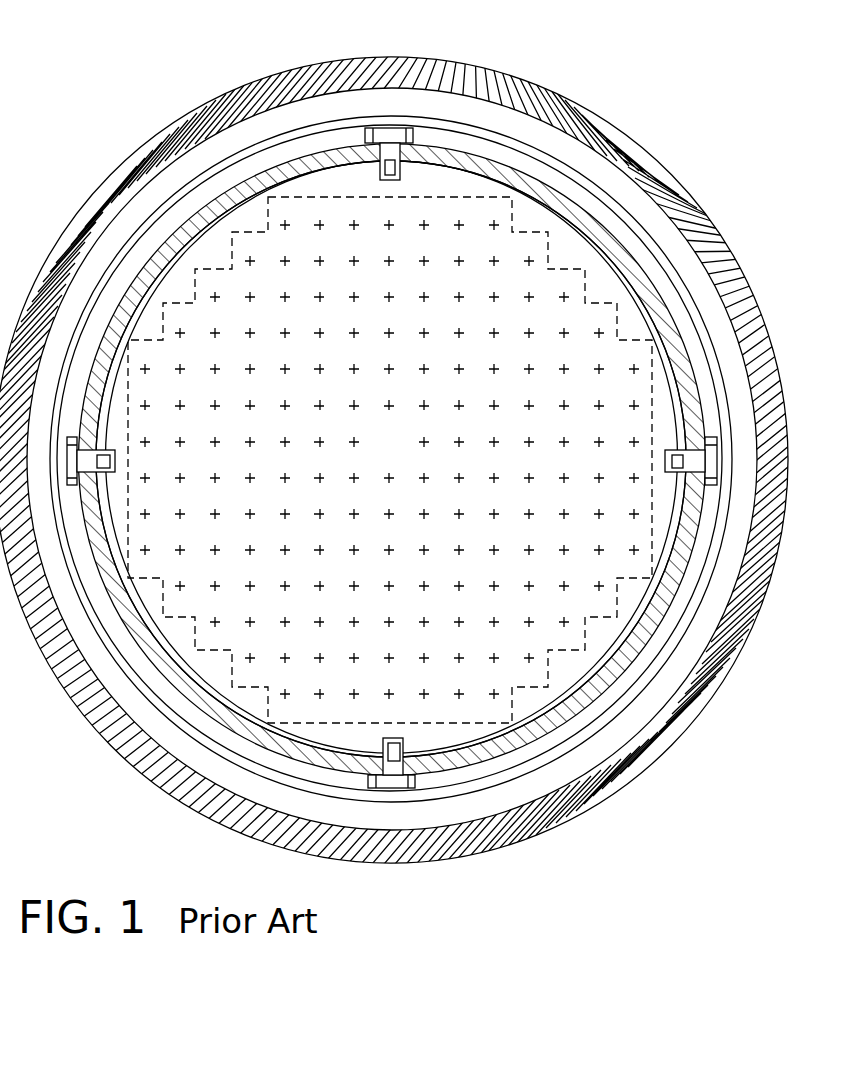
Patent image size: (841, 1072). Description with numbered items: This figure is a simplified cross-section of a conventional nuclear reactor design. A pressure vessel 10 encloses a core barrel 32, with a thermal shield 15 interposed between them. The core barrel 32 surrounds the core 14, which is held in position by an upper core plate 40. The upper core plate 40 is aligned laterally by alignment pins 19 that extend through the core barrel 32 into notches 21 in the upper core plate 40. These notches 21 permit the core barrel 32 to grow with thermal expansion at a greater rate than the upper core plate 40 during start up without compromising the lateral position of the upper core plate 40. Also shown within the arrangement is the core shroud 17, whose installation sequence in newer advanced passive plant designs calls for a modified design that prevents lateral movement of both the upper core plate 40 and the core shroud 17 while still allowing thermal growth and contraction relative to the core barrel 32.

The pressure vessel 10 is at (167, 128).
The core 14 is at (403, 453).
The thermal shield 15 is at (128, 233).
The core shroud 17 is at (563, 255).
The alignment pins 19 is at (417, 148).
The notches 21 is at (444, 172).
The core barrel 32 is at (150, 660).
The upper core plate 40 is at (612, 352).